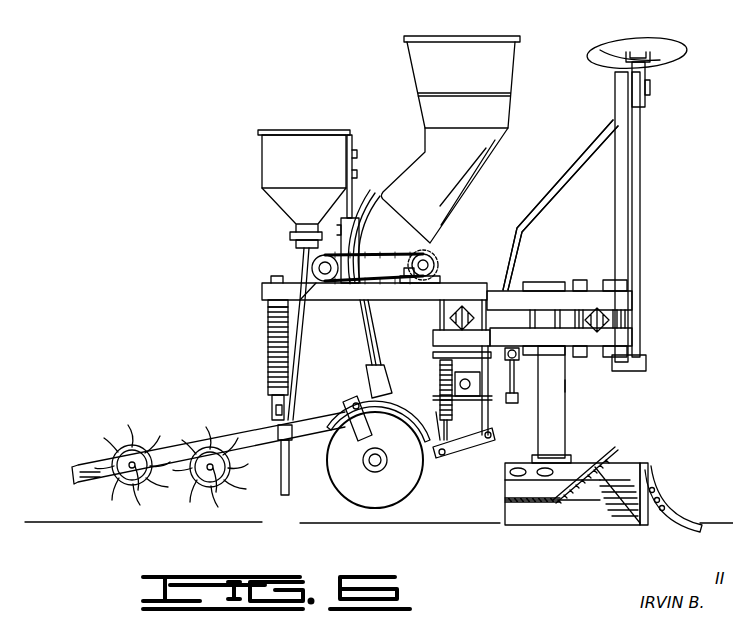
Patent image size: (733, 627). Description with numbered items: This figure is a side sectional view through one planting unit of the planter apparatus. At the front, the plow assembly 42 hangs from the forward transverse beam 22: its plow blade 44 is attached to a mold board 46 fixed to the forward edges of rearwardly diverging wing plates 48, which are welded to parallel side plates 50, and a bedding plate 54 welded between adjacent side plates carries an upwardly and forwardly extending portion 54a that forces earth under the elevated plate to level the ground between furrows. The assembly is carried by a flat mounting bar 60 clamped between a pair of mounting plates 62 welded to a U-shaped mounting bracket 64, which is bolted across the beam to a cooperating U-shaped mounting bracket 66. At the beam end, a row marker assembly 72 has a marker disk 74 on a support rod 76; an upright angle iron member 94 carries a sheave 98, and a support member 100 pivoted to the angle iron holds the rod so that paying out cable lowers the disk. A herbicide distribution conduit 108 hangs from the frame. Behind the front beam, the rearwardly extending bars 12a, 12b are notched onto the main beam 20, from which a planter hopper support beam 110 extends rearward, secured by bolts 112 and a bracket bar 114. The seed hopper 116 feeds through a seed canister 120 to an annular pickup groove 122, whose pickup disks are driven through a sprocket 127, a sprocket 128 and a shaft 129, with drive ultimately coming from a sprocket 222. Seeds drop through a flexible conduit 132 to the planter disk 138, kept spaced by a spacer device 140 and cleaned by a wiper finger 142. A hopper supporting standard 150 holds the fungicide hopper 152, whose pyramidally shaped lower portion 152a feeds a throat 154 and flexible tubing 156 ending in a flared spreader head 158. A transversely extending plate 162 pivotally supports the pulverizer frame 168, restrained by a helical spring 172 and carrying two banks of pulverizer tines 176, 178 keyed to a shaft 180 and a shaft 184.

The rearwardly extending bar 12a is at (559, 299).
The rearwardly extending bar 12b is at (561, 337).
The main beam 20 is at (448, 322).
The forward transverse beam 22 is at (597, 308).
The plow assembly 42 is at (582, 389).
The plow blade 44 is at (690, 516).
The mold board 46 is at (652, 520).
The wing plate 48 is at (622, 468).
The side plate 50 is at (580, 523).
The bedding plate 54 is at (530, 505).
The upwardly and forwardly extending portion 54a is at (600, 440).
The mounting bar 60 is at (555, 399).
The mounting plate 62 is at (530, 282).
The U-shaped mounting bracket 64 is at (578, 280).
The cooperating U-shaped mounting bracket 66 is at (640, 272).
The row marker assembly 72 is at (676, 168).
The marker disk 74 is at (674, 56).
The support rod 76 is at (572, 165).
The angle iron member 94 is at (615, 190).
The sheave 98 is at (646, 100).
The support member 100 is at (641, 240).
The herbicide distribution conduit 108 is at (522, 378).
The planter hopper support beam 110 is at (342, 305).
The bolt 112 is at (440, 280).
The bracket bar 114 is at (434, 340).
The seed hopper 116 is at (472, 73).
The seed canister 120 is at (462, 163).
The annular pickup groove 122 is at (382, 190).
The sprocket 127 is at (434, 262).
The sprocket 128 is at (406, 250).
The shaft 129 is at (436, 256).
The flexible conduit 132 is at (370, 345).
The planter disk 138 is at (392, 496).
The spacer device 140 is at (430, 462).
The wiper finger 142 is at (370, 432).
The hopper supporting standard 150 is at (353, 158).
The fungicide hopper 152 is at (314, 161).
The pyramidally shaped lower portion 152a is at (320, 210).
The throat 154 is at (290, 236).
The flexible tubing 156 is at (302, 265).
The flared spreader head 158 is at (290, 466).
The transversely extending plate 162 is at (455, 362).
The pulverizer frame 168 is at (72, 478).
The helical spring 172 is at (268, 348).
The pulverizer tines 176 is at (182, 442).
The pulverizer tines 178 is at (97, 440).
The shaft 180 is at (226, 494).
The shaft 184 is at (148, 492).
The sprocket 222 is at (326, 300).